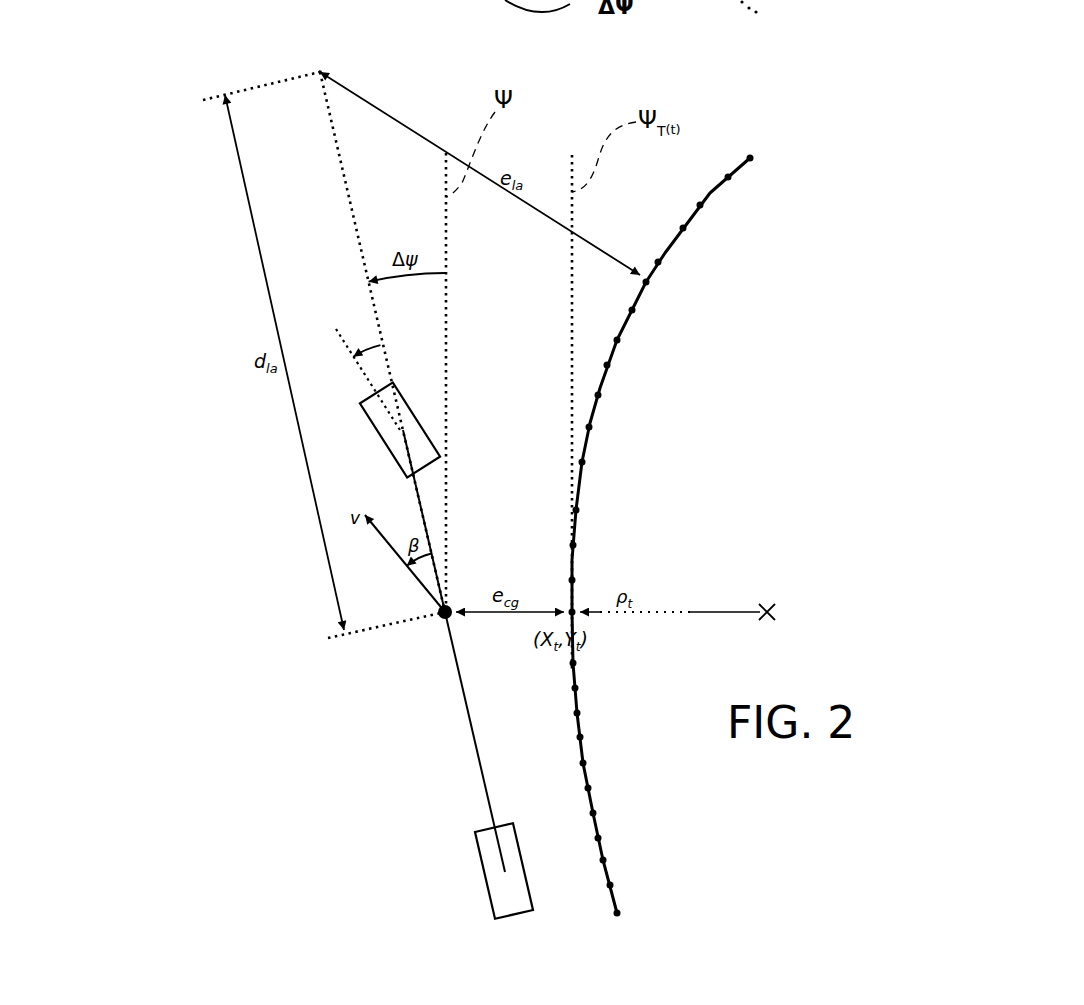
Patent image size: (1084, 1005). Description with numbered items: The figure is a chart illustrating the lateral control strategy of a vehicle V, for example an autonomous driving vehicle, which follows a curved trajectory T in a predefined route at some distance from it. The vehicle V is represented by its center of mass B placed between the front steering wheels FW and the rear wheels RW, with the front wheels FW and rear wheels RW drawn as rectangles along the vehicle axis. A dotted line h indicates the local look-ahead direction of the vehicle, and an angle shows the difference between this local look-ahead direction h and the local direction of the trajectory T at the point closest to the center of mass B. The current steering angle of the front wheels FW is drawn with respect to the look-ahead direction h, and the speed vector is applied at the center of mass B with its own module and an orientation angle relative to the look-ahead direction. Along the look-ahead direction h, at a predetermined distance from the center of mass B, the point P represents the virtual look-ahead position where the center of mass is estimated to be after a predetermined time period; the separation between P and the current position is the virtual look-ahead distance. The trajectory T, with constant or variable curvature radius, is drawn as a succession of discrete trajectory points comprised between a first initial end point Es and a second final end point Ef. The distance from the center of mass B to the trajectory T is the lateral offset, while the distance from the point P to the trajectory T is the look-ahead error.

The virtual look-ahead position P is at (320, 72).
The local look-ahead direction h is at (347, 190).
The front steering wheels FW is at (377, 428).
The rear wheels RW is at (485, 850).
The center of mass B is at (445, 620).
The vehicle V is at (378, 648).
The curved trajectory T is at (593, 423).
The second final end point Ef is at (750, 160).
The first initial end point Es is at (620, 913).